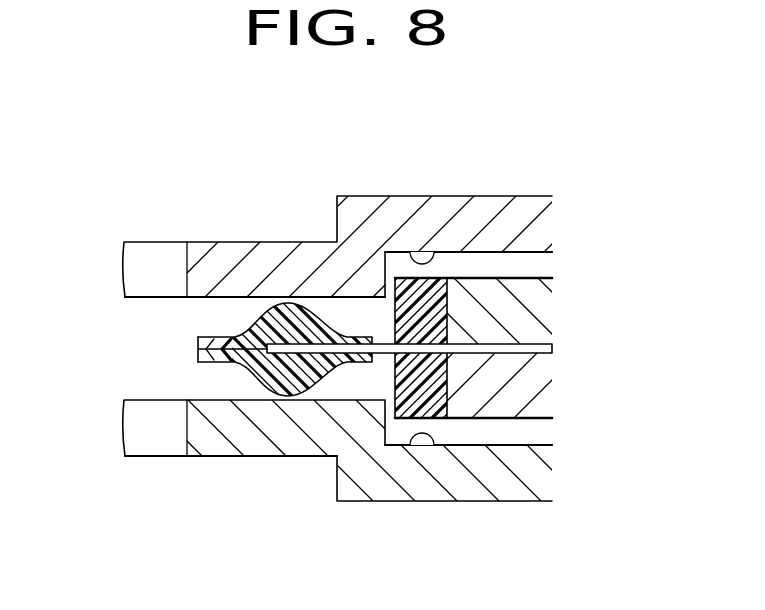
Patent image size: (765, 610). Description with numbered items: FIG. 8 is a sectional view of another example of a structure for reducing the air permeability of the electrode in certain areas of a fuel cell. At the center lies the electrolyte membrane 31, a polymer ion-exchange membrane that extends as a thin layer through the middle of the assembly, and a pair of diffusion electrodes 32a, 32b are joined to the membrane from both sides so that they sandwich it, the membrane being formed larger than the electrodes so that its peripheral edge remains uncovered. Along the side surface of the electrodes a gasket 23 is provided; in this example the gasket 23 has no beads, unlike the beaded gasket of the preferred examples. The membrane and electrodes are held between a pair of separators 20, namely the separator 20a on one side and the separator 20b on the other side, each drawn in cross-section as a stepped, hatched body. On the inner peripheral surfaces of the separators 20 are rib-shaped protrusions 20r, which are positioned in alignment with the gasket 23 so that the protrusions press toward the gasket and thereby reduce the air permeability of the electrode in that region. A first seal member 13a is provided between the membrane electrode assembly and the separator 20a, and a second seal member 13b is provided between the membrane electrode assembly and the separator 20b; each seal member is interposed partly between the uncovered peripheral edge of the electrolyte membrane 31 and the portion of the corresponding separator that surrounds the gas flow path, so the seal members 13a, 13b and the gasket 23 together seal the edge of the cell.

The first seal member 13a is at (260, 383).
The second seal member 13b is at (260, 316).
The separator 20 is at (514, 218).
The separator 20a is at (444, 473).
The separator 20b is at (444, 224).
The rib-shaped protrusion 20r is at (422, 248).
The gasket 23 is at (393, 320).
The electrolyte membrane 31 is at (552, 348).
The electrode 32a is at (540, 402).
The electrode 32b is at (530, 306).